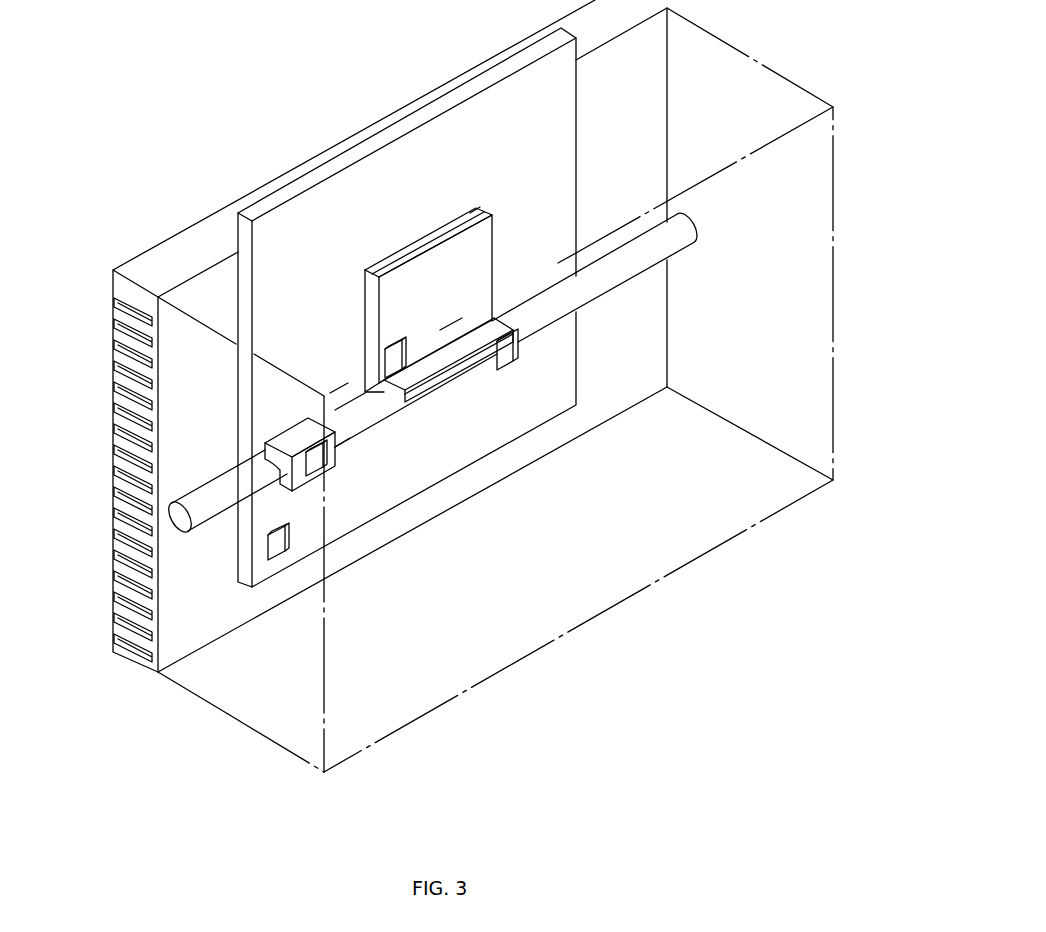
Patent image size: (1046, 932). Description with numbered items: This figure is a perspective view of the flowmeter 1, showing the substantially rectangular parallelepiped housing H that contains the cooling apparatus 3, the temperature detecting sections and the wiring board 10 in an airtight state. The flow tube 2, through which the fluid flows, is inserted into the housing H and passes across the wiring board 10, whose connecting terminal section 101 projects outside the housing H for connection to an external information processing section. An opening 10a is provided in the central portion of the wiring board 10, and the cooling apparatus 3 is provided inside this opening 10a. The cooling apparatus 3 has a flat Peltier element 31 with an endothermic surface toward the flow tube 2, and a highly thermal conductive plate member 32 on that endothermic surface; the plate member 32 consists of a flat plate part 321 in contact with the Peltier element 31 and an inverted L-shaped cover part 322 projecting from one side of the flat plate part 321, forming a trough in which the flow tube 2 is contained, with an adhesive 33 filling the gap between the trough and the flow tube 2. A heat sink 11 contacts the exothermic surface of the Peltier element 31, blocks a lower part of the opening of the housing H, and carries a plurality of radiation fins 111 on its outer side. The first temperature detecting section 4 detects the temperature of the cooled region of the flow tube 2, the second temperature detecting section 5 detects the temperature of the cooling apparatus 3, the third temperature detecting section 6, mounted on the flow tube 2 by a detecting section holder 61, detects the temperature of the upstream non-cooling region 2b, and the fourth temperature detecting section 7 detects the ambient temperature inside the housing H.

The flowmeter 1 is at (233, 94).
The housing H is at (834, 230).
The wiring board 10 is at (578, 148).
The connecting terminal section 101 is at (447, 100).
The opening 10a is at (483, 207).
The heat sink 11 is at (163, 243).
The radiation fins 111 is at (113, 373).
The flow tube 2 is at (623, 283).
The non-cooling region 2b is at (343, 443).
The cooling apparatus 3 is at (357, 328).
The Peltier element 31 is at (365, 277).
The plate member 32 is at (493, 237).
The flat plate part 321 is at (474, 277).
The cover part 322 is at (444, 384).
The adhesive 33 is at (490, 352).
The first temperature detecting section 4 is at (516, 352).
The second temperature detecting section 5 is at (402, 374).
The third temperature detecting section 6 is at (325, 464).
The detecting section holder 61 is at (281, 423).
The fourth temperature detecting section 7 is at (285, 557).